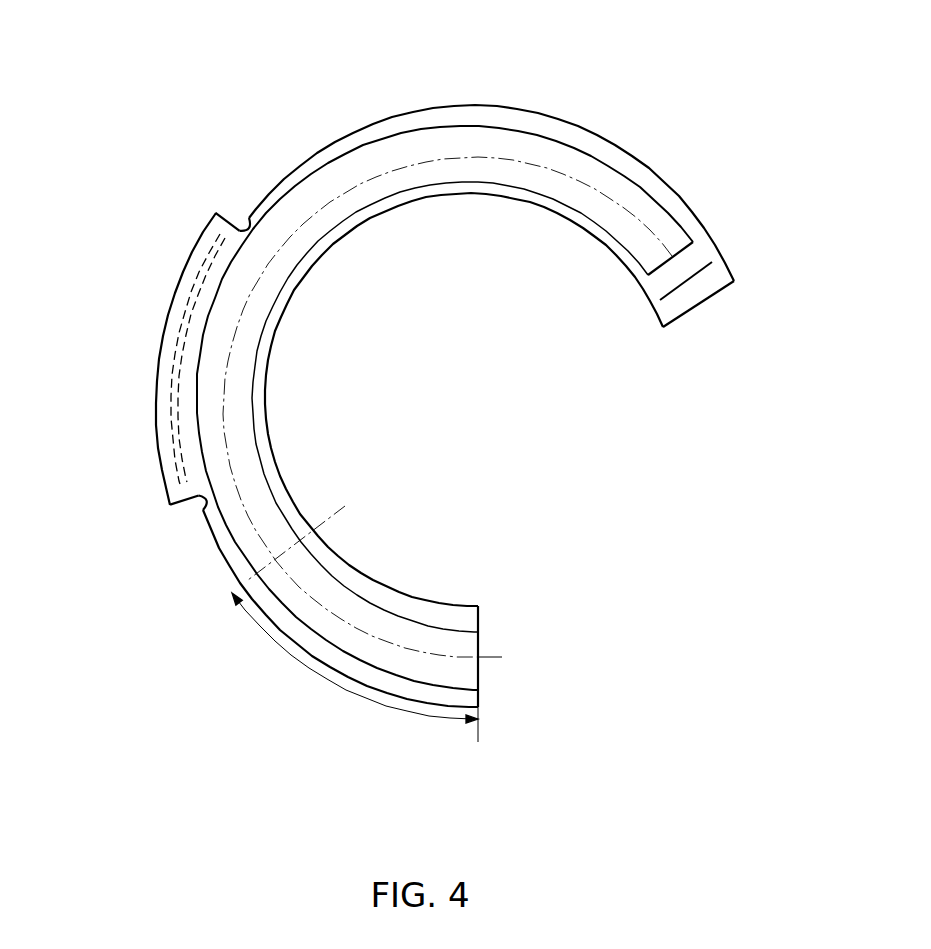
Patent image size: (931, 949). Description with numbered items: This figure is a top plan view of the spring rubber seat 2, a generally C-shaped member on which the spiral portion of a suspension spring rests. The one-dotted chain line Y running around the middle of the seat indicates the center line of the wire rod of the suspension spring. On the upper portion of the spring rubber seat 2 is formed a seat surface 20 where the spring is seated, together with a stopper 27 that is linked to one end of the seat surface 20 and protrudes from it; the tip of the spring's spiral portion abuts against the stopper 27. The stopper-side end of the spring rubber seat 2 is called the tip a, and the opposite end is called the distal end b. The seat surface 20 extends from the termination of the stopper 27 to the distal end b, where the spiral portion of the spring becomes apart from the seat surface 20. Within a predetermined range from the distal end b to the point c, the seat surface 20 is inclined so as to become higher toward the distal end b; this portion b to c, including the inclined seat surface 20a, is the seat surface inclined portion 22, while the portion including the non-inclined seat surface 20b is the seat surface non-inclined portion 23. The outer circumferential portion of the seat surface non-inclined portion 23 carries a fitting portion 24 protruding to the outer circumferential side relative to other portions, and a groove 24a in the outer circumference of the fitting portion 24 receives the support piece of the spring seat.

The spring rubber seat 2 is at (702, 203).
The seat surface 20 is at (478, 127).
The inclined seat surface 20a is at (362, 615).
The non-inclined seat surface 20b is at (343, 178).
The seat surface inclined portion 22 is at (330, 681).
The seat surface non-inclined portion 23 is at (271, 189).
The fitting portion 24 is at (158, 376).
The groove 24a is at (181, 316).
The stopper 27 is at (681, 268).
The tip a is at (738, 287).
The distal end b is at (480, 686).
The end of inclined range c is at (229, 597).
The center line of the wire rod Y is at (509, 647).